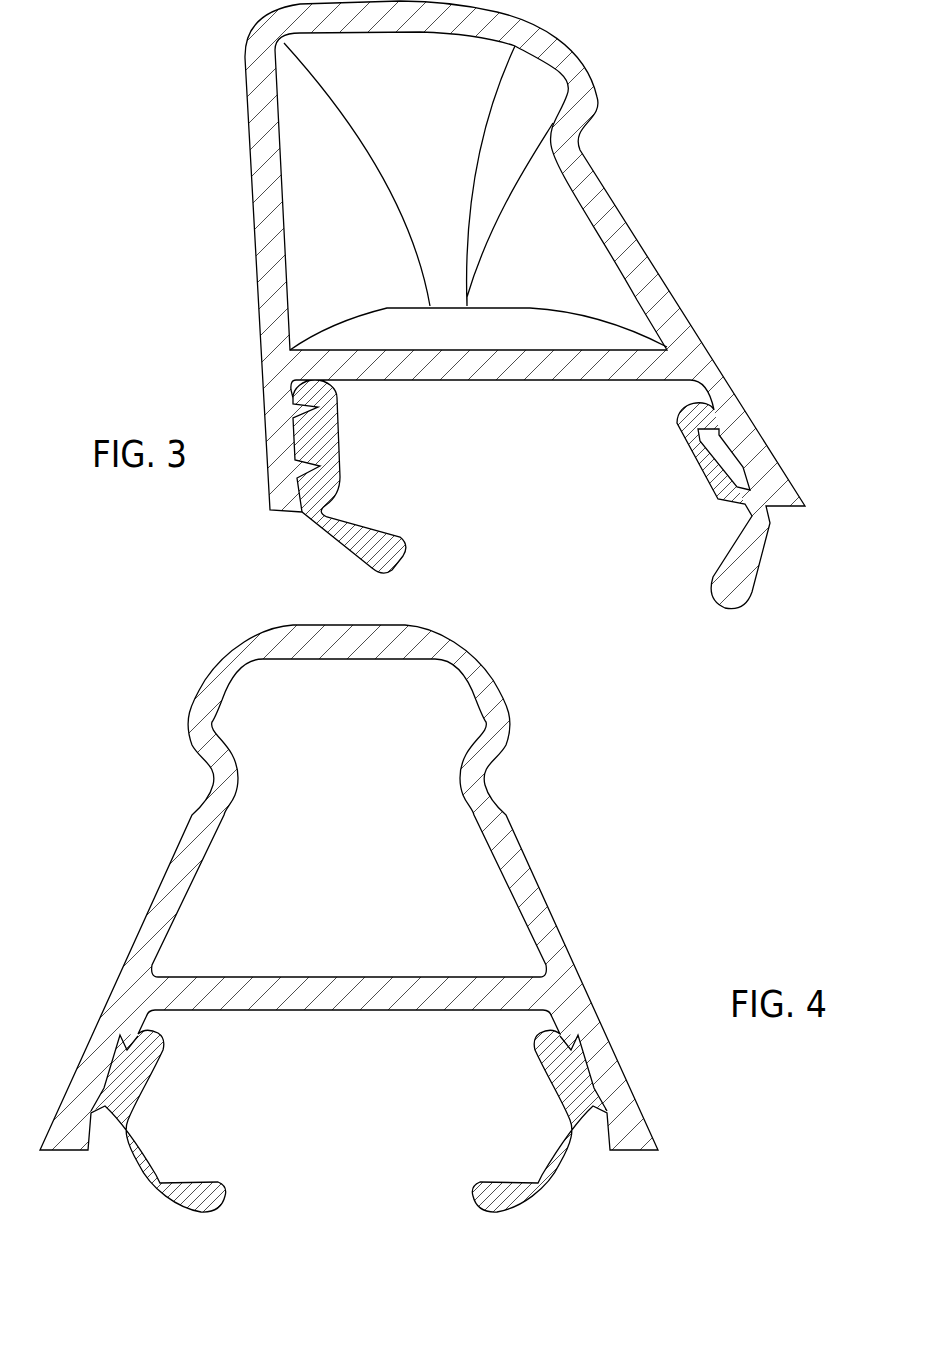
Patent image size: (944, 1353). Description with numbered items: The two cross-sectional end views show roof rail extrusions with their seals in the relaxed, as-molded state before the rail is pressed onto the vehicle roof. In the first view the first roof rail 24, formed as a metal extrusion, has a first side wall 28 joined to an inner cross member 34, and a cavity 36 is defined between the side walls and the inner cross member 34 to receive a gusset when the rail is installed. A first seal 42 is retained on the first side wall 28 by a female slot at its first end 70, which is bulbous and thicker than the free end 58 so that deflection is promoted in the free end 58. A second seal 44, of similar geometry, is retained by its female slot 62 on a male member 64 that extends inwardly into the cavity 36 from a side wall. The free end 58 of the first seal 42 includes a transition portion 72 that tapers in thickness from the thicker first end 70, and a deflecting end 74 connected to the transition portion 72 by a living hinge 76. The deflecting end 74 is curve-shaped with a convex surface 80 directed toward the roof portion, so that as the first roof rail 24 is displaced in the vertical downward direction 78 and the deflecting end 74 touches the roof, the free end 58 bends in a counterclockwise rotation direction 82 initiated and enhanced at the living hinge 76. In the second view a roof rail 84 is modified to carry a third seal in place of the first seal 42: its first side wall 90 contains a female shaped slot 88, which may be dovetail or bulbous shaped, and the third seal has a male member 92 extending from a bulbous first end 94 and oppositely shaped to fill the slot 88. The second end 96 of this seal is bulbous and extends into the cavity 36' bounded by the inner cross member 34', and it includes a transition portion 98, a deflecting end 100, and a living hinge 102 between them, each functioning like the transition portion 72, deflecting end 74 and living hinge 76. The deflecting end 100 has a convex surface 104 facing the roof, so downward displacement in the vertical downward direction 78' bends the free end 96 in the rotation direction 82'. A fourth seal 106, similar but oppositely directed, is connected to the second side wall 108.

In FIG. 3, the first roof rail 24 is at (645, 97).
In FIG. 3, the first side wall 28 is at (690, 350).
In FIG. 3, the inner cross member 34 is at (490, 396).
In FIG. 3, the cavity 36 is at (493, 359).
In FIG. 3, the first seal 42 is at (672, 453).
In FIG. 3, the second seal 44 is at (345, 443).
In FIG. 3, the free end 58 is at (777, 517).
In FIG. 3, the female slot 62 is at (707, 447).
In FIG. 3, the male member 64 is at (723, 457).
In FIG. 3, the first end 70 is at (683, 420).
In FIG. 3, the transition portion 72 is at (752, 510).
In FIG. 3, the deflecting end 74 is at (710, 587).
In FIG. 3, the living hinge 76 is at (755, 525).
In FIG. 3, the vertical downward direction 78 is at (875, 452).
In FIG. 3, the convex surface 80 is at (731, 613).
In FIG. 3, the rotation direction 82 is at (594, 555).
In FIG. 4, the roof rail 84 is at (541, 804).
In FIG. 4, the female shaped slot 88 is at (586, 1050).
In FIG. 4, the first side wall 90 is at (541, 895).
In FIG. 4, the male member 92 is at (591, 1087).
In FIG. 4, the bulbous first end 94 is at (545, 1047).
In FIG. 4, the second end 96 is at (608, 1153).
In FIG. 4, the transition portion 98 is at (568, 1130).
In FIG. 4, the deflecting end 100 is at (483, 1200).
In FIG. 4, the living hinge 102 is at (545, 1180).
In FIG. 4, the convex surface 104 is at (479, 1209).
In FIG. 4, the fourth seal 106 is at (153, 1047).
In FIG. 4, the second side wall 108 is at (73, 1137).
In FIG. 4, the web 34' is at (349, 935).
In FIG. 4, the cavity 36' is at (349, 964).
In FIG. 4, the vertical downward direction 78' is at (316, 1097).
In FIG. 4, the rotation direction 82' is at (433, 1152).